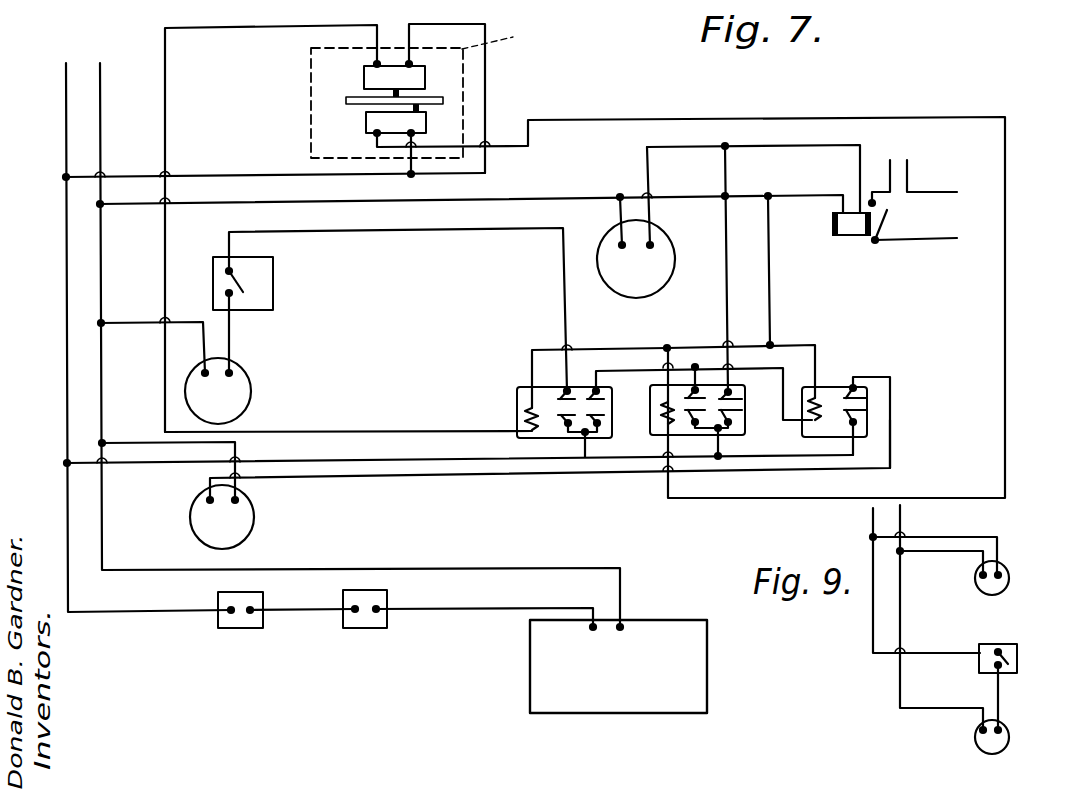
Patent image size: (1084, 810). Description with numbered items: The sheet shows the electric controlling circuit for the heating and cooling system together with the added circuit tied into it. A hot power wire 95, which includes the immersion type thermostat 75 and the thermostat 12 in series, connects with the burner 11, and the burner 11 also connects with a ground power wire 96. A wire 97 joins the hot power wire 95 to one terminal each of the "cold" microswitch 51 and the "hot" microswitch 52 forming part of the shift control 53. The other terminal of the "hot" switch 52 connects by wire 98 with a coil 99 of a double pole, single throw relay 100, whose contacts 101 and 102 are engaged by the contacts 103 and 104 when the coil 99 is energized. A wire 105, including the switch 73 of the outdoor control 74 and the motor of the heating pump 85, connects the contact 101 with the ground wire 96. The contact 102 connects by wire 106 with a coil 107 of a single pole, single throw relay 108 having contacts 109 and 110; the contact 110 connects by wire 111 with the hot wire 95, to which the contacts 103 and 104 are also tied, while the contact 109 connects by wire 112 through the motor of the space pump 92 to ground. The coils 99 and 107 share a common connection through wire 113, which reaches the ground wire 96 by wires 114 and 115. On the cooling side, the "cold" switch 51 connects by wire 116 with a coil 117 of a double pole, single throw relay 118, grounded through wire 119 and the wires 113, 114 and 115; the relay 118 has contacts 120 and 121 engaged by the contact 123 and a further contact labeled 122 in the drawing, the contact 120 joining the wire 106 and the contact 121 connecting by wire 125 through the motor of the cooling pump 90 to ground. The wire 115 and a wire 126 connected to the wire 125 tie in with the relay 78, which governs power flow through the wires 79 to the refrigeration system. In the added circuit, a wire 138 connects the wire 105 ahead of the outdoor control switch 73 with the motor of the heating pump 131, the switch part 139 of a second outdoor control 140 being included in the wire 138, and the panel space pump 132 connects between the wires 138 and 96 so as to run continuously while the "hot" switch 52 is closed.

In FIG. 7, the burner 11 is at (698, 655).
In FIG. 7, the thermostat 12 is at (370, 630).
In FIG. 7, the "cold" microswitch 51 is at (427, 122).
In FIG. 7, the "hot" microswitch 52 is at (425, 78).
In FIG. 7, the shift control 53 is at (463, 70).
In FIG. 7, the switch of outdoor control 73 is at (277, 302).
In FIG. 7, the outdoor control 74 is at (282, 280).
In FIG. 7, the immersion type thermostat 75 is at (237, 630).
In FIG. 7, the relay 78 is at (850, 237).
In FIG. 7, the wires 79 is at (922, 212).
In FIG. 7, the heating pump 85 is at (230, 408).
In FIG. 7, the cooling pump 90 is at (650, 282).
In FIG. 7, the space pump 92 is at (232, 534).
In FIG. 7, the hot power wire 95 is at (64, 258).
In FIG. 7, the ground power wire 96 is at (100, 282).
In FIG. 9, the ground power wire 96 is at (900, 510).
In FIG. 7, the wire 97 is at (215, 173).
In FIG. 7, the wire 98 is at (165, 93).
In FIG. 7, the coil 99 is at (525, 418).
In FIG. 7, the double pole, single throw relay 100 is at (517, 390).
In FIG. 7, the contact 101 is at (558, 388).
In FIG. 7, the contact 102 is at (589, 386).
In FIG. 7, the contact 103 is at (563, 416).
In FIG. 7, the contact 104 is at (600, 412).
In FIG. 7, the wire 105 is at (562, 278).
In FIG. 7, the wire 106 is at (620, 370).
In FIG. 7, the coil 107 is at (813, 413).
In FIG. 7, the single pole, single throw relay 108 is at (830, 386).
In FIG. 7, the contact 109 is at (857, 397).
In FIG. 7, the contact 110 is at (870, 413).
In FIG. 7, the wire 111 is at (856, 445).
In FIG. 7, the wire 112 is at (893, 453).
In FIG. 7, the wire 113 is at (680, 346).
In FIG. 7, the wire 114 is at (768, 261).
In FIG. 7, the wire 115 is at (745, 192).
In FIG. 7, the wire 116 is at (672, 110).
In FIG. 7, the coil 117 is at (662, 415).
In FIG. 7, the double pole, single throw relay 118 is at (655, 436).
In FIG. 7, the wire 119 is at (669, 357).
In FIG. 7, the contact 120 is at (695, 391).
In FIG. 7, the contact 121 is at (735, 396).
In FIG. 7, the relay contact 122 is at (742, 410).
In FIG. 7, the contact 123 is at (682, 412).
In FIG. 7, the wire 125 is at (725, 233).
In FIG. 7, the wire 126 is at (803, 142).
In FIG. 9, the heating pump 131 is at (977, 745).
In FIG. 9, the panel space pump 132 is at (990, 597).
In FIG. 9, the wire 138 is at (873, 518).
In FIG. 9, the switch part of outdoor control 139 is at (1012, 645).
In FIG. 9, the outdoor control 140 is at (1024, 658).